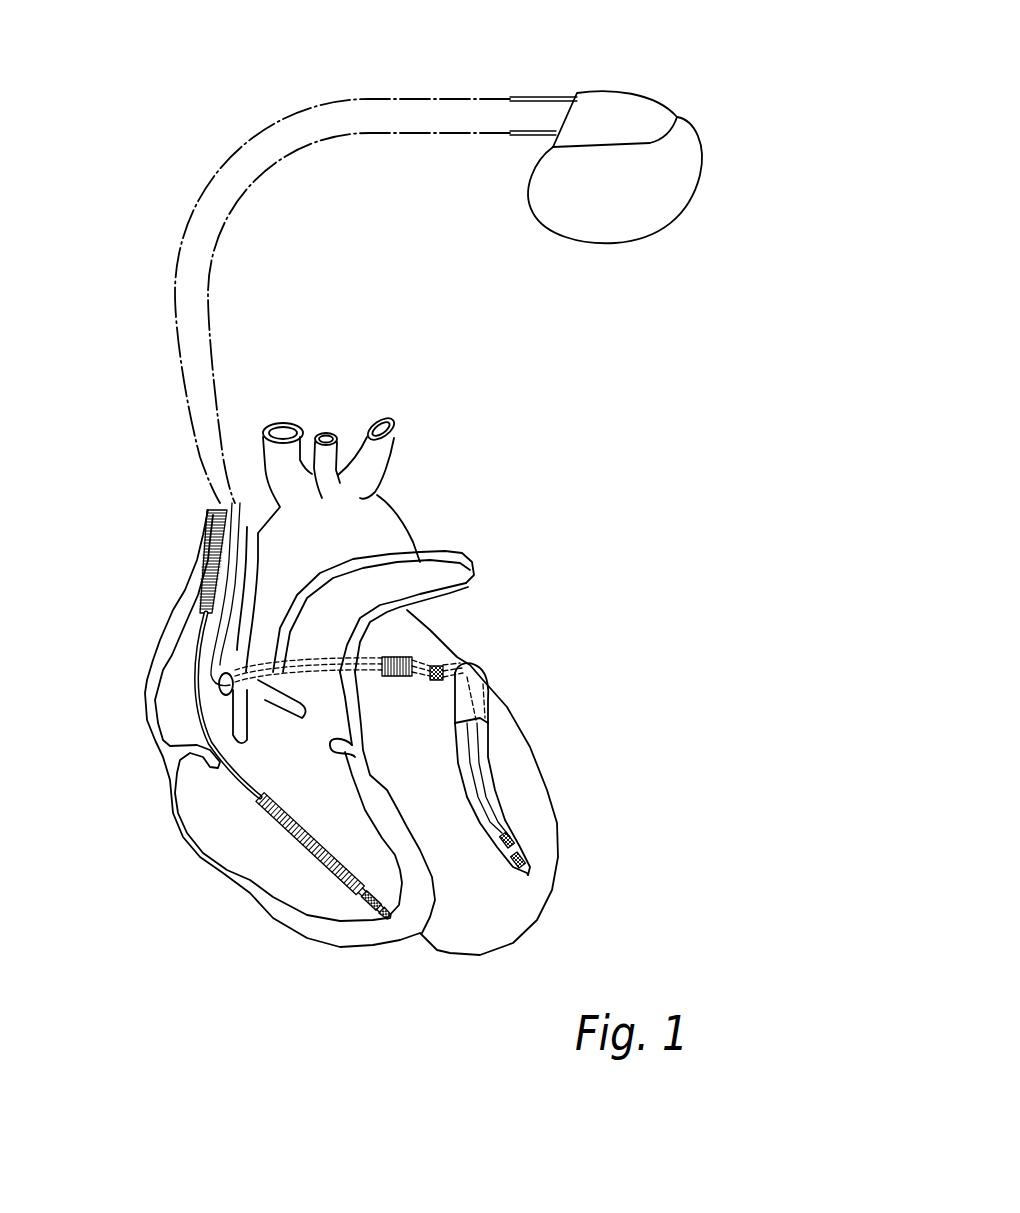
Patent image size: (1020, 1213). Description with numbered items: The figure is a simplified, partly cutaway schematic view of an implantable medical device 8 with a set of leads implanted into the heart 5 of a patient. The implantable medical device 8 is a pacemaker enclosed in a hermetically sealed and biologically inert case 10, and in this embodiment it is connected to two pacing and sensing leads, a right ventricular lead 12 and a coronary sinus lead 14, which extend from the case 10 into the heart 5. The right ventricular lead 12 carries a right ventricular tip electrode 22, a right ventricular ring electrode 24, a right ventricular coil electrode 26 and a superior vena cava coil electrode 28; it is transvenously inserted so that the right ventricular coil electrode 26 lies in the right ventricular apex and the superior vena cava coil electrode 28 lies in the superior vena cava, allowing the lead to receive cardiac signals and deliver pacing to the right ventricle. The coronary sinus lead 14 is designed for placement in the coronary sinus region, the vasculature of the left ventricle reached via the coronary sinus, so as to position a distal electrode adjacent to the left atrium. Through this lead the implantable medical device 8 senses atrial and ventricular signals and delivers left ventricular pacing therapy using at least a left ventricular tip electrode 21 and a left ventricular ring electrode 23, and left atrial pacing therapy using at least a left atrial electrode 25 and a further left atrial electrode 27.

The heart 5 is at (553, 712).
The implantable medical device 8 is at (647, 142).
The case 10 is at (682, 175).
The right ventricular lead 12 is at (430, 98).
The coronary sinus lead 14 is at (310, 143).
The left ventricular tip electrode 21 is at (524, 863).
The right ventricular tip electrode 22 is at (382, 922).
The left ventricular ring electrode 23 is at (512, 838).
The right ventricular ring electrode 24 is at (366, 908).
The left atrial electrode 25 is at (447, 664).
The right ventricular coil electrode 26 is at (323, 867).
The left atrial electrode 27 is at (410, 657).
The superior vena cava coil electrode 28 is at (210, 513).